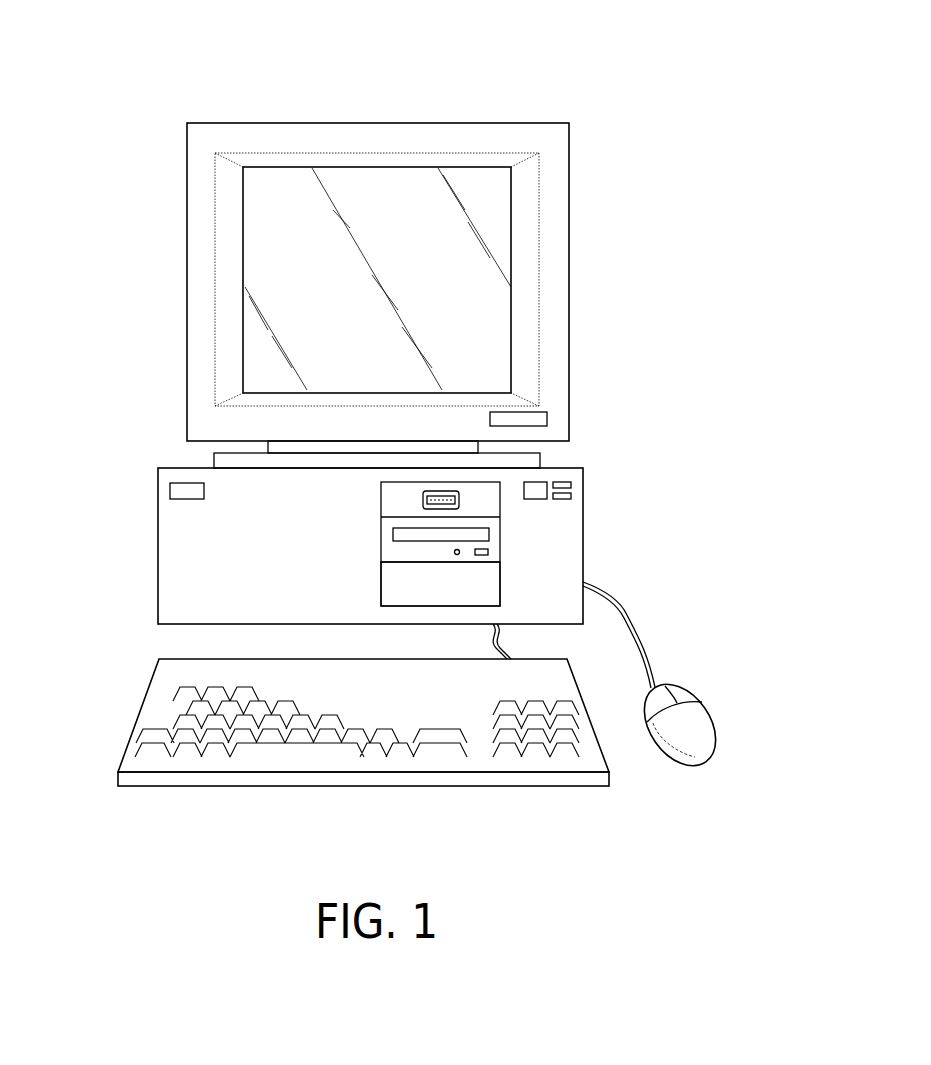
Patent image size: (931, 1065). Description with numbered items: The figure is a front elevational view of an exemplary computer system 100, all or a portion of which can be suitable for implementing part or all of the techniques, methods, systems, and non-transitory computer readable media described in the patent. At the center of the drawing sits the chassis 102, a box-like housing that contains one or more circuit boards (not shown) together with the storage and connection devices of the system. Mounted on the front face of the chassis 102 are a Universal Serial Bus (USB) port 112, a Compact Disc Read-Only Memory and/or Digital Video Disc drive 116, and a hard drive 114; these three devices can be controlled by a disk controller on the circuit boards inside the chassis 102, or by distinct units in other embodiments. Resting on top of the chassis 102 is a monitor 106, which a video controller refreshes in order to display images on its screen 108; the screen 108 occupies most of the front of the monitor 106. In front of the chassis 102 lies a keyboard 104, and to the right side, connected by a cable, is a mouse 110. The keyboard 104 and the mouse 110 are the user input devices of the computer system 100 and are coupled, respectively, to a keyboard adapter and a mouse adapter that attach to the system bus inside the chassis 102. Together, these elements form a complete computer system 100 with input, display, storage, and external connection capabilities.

The computer system 100 is at (567, 92).
The chassis 102 is at (158, 548).
The keyboard 104 is at (138, 713).
The monitor 106 is at (263, 122).
The screen 108 is at (290, 283).
The mouse 110 is at (700, 715).
The Universal Serial Bus (USB) port 112 is at (459, 497).
The hard drive 114 is at (491, 583).
The Compact Disc Read-Only Memory (CD-ROM) and/or Digital Video Disc (DVD) drive 116 is at (490, 541).